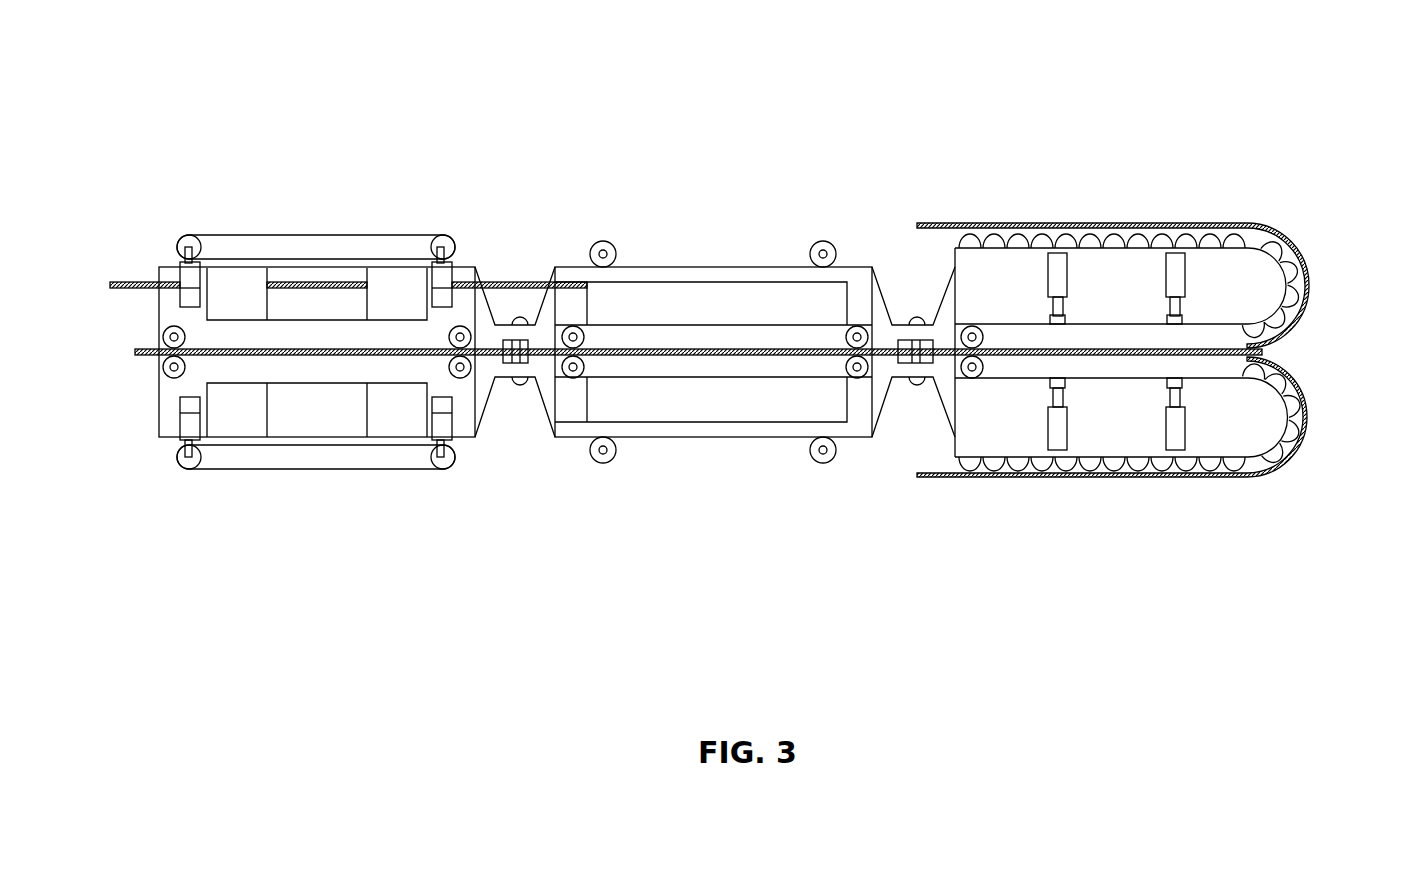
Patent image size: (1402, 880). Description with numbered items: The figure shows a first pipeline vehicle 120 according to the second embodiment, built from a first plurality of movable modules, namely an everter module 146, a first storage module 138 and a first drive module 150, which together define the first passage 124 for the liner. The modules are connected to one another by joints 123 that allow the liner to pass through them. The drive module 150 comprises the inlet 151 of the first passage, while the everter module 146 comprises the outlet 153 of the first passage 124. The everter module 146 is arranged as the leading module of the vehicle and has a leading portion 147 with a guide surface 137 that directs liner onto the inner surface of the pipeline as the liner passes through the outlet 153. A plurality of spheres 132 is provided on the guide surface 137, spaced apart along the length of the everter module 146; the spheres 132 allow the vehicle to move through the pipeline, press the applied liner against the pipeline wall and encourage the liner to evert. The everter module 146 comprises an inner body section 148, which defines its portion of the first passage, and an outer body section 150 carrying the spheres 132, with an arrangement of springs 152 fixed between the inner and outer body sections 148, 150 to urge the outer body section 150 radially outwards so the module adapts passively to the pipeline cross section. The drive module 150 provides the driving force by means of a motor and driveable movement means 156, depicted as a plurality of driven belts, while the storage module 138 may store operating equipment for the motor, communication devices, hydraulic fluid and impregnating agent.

The first pipeline vehicle 120 is at (749, 62).
The joint 123 is at (538, 374).
The first passage 124 is at (735, 383).
The spheres 132 is at (1212, 470).
The guide surface 137 is at (1273, 255).
The first storage module 138 is at (663, 438).
The everter module 146 is at (1220, 260).
The leading portion 147 is at (1305, 280).
The inner body section 148 is at (1103, 378).
The first drive module 150 is at (328, 437).
The inlet 151 is at (160, 363).
The springs 152 is at (1182, 382).
The outlet 153 is at (1280, 347).
The driveable movement means 156 is at (241, 233).